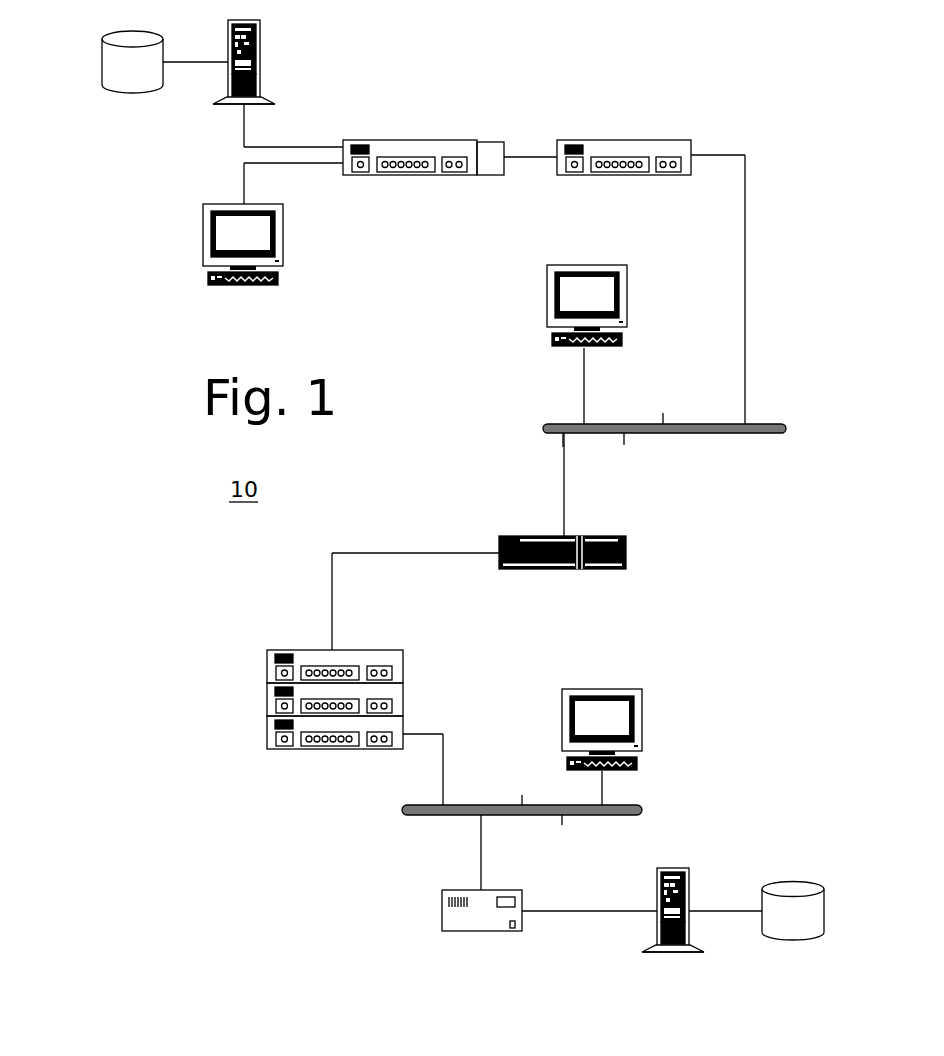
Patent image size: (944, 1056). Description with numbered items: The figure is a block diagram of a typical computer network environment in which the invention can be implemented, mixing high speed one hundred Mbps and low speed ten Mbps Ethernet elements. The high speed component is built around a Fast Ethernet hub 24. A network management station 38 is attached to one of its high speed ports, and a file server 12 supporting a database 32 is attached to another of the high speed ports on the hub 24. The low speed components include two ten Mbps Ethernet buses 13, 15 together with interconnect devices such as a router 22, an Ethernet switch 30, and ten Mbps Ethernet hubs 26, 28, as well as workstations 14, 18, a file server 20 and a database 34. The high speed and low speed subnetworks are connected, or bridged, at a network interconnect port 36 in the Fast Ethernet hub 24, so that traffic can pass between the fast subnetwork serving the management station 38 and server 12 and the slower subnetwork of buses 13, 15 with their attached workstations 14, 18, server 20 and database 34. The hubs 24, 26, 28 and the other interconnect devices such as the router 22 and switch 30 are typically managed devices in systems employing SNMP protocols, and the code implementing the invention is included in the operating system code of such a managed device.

The file server 12 is at (261, 62).
The Ethernet bus 13 is at (545, 425).
The workstation 14 is at (547, 305).
The Ethernet bus 15 is at (642, 808).
The workstation 18 is at (643, 729).
The file server 20 is at (671, 953).
The router 22 is at (626, 549).
The Fast Ethernet hub 24 is at (414, 138).
The Ethernet hub 26 is at (627, 138).
The Ethernet hub 28 is at (267, 731).
The Ethernet switch 30 is at (441, 911).
The database 32 is at (101, 62).
The database 34 is at (824, 909).
The network interconnect port 36 is at (488, 176).
The network management station 38 is at (202, 243).